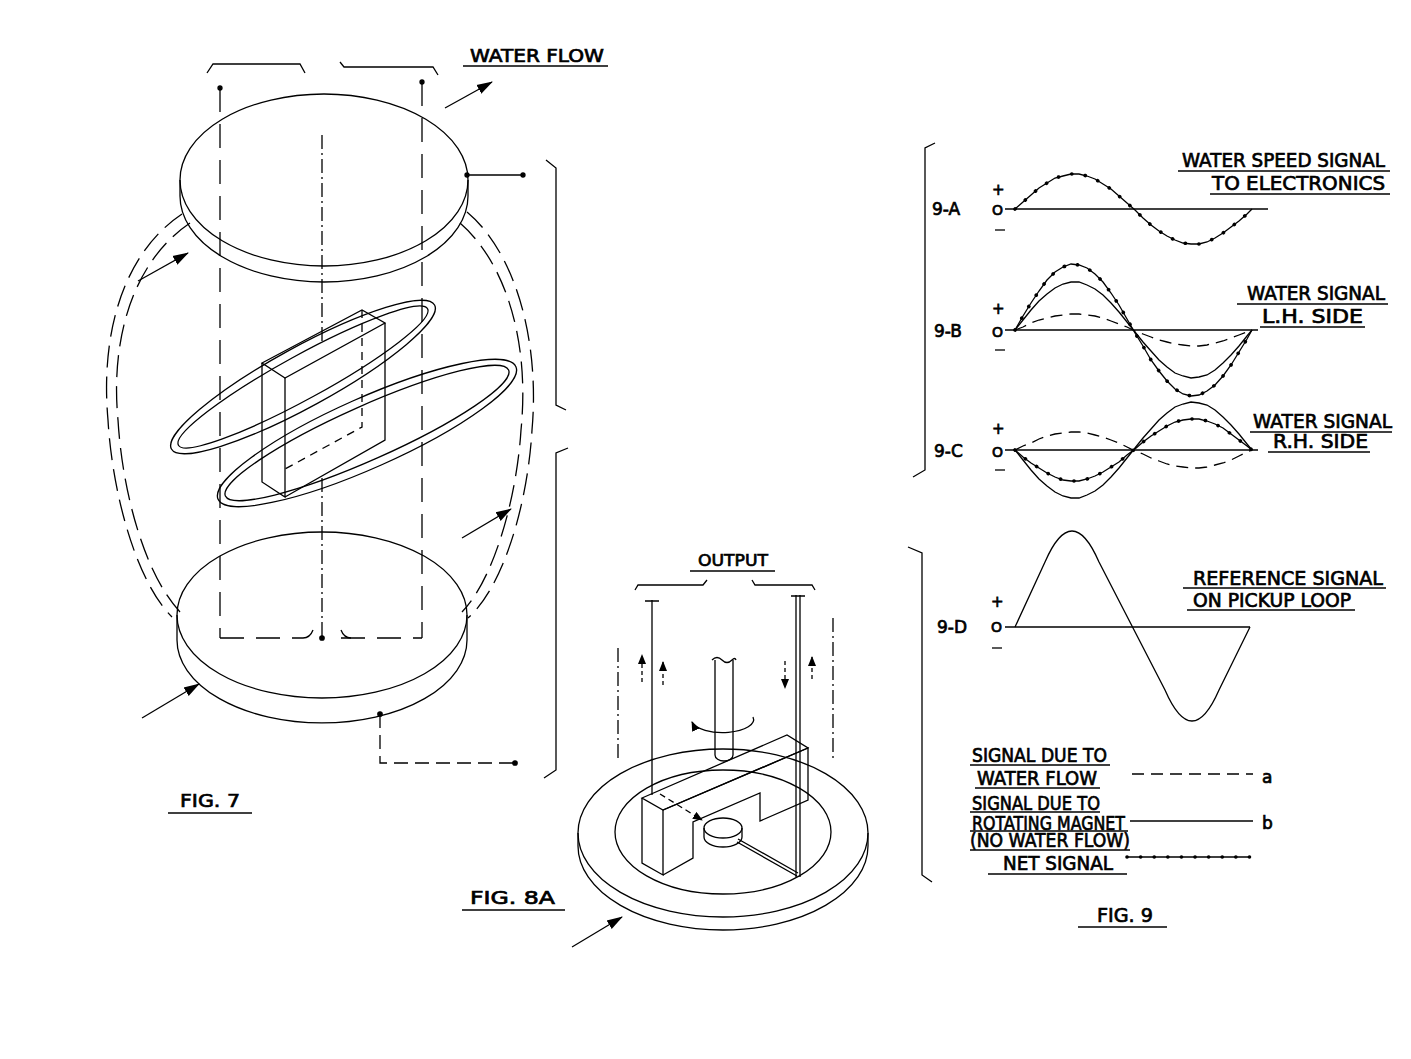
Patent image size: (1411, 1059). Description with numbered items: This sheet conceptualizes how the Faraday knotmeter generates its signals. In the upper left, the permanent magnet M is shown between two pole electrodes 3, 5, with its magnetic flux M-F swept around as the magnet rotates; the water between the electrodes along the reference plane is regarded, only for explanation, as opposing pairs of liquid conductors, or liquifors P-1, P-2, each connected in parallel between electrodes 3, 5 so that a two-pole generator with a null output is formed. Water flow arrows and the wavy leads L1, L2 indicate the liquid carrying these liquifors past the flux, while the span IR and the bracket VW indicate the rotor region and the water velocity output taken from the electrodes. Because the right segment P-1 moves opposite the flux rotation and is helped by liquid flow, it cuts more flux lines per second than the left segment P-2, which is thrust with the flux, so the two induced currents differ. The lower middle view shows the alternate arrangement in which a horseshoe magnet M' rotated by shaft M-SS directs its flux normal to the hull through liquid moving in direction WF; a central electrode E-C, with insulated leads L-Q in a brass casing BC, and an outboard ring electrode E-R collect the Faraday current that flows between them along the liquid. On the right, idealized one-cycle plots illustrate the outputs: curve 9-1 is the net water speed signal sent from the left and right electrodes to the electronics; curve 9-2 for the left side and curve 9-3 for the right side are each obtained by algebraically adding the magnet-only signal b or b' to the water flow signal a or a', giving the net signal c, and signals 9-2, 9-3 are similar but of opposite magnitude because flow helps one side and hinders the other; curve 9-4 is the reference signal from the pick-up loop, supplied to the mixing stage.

In FIG. 7, the pole electrode 3 is at (463, 208).
In FIG. 7, the pole electrode 5 is at (406, 690).
In FIG. 7, the rotor current / inner radius span IR is at (322, 55).
In FIG. 7, the permanent magnet M is at (323, 403).
In FIG. 7, the magnetic flux M-F is at (206, 388).
In FIG. 7, the liquifor P-1 is at (520, 345).
In FIG. 7, the liquifor P-2 is at (118, 388).
In FIG. 7, the right loop lead L1 is at (518, 570).
In FIG. 7, the left loop lead L2 is at (127, 605).
In FIG. 7, the water velocity signal VW is at (564, 469).
In FIG. 8A, the insulated leads L-Q is at (797, 638).
In FIG. 8A, the brass casing BC is at (834, 697).
In FIG. 8A, the shaft M-SS is at (721, 676).
In FIG. 8A, the horseshoe magnet M' is at (725, 805).
In FIG. 8A, the central electrode E-C is at (725, 833).
In FIG. 8A, the ring electrode E-R is at (845, 822).
In FIG. 8A, the water flow direction WF is at (589, 942).
In FIG. 9, the water speed signal curve 9-1 is at (1085, 173).
In FIG. 9, the left side signal curve 9-2 is at (1080, 262).
In FIG. 9, the right side signal curve 9-3 is at (1203, 413).
In FIG. 9, the reference output signal curve 9-4 is at (1093, 544).
In FIG. 9, the water flow signal a is at (1133, 339).
In FIG. 9, the magnet-only signal b is at (1133, 325).
In FIG. 9, the net signal c is at (1199, 861).
In FIG. 9, the water flow signal (right side) a' is at (1133, 430).
In FIG. 9, the magnet-only signal (right side) b' is at (1133, 442).